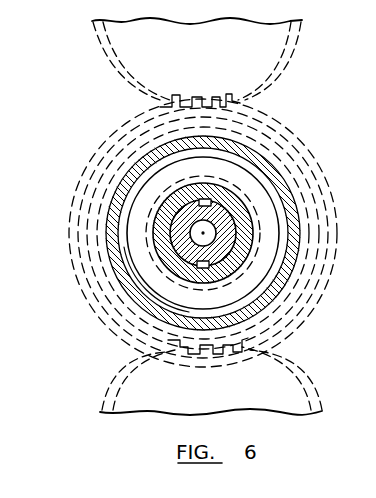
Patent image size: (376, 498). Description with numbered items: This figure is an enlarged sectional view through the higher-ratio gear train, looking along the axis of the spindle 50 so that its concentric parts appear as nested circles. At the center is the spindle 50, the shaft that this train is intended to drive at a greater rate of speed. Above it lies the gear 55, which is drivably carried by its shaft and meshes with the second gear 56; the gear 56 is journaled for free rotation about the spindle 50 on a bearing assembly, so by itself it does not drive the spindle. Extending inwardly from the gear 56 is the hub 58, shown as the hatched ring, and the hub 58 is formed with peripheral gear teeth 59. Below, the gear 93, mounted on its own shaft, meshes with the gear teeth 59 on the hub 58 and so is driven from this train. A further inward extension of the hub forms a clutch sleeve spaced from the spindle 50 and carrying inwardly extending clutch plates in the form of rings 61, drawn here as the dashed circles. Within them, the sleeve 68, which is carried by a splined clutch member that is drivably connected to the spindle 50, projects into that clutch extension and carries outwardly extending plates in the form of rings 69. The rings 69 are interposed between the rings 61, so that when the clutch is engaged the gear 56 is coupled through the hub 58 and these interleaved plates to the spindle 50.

The spindle 50 is at (242, 217).
The gear 55 is at (247, 84).
The second gear 56 is at (232, 103).
The hub 58 is at (299, 247).
The peripheral gear teeth 59 is at (222, 338).
The clutch plates (rings) 61 is at (300, 186).
The sleeve 68 is at (228, 210).
The plates (rings) 69 is at (279, 233).
The gear 93 is at (237, 350).